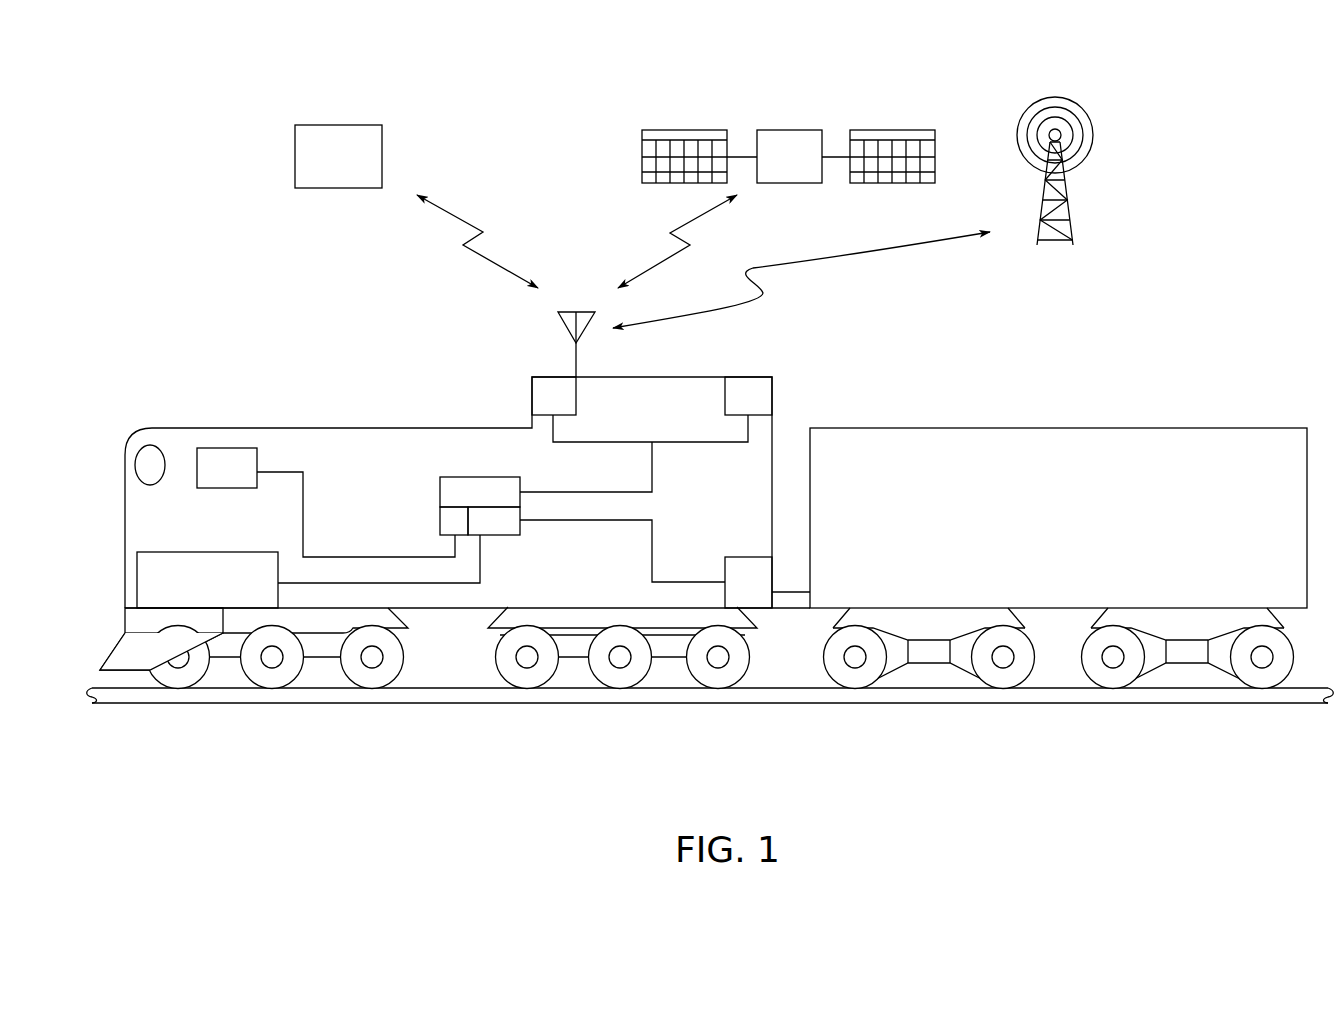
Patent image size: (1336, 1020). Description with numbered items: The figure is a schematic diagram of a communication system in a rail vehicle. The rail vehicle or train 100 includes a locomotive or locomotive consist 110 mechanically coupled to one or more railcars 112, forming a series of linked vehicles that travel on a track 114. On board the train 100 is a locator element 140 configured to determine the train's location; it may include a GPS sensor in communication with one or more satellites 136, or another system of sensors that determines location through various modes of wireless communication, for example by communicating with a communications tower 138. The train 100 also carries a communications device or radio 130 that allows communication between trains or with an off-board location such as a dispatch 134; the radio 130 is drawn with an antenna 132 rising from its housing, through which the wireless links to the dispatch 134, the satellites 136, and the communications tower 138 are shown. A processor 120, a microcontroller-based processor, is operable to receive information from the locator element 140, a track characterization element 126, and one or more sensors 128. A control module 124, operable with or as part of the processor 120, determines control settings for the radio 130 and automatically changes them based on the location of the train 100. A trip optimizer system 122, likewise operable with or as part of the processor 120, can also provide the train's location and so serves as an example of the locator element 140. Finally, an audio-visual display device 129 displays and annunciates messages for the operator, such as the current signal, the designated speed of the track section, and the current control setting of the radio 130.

The rail vehicle 100 is at (802, 404).
The locomotive consist 110 is at (340, 428).
The railcar 112 is at (972, 428).
The track 114 is at (690, 703).
The processor 120 is at (490, 477).
The trip optimizer system 122 is at (440, 520).
The control module 124 is at (497, 535).
The track characterization element 126 is at (128, 590).
The sensor 128 is at (745, 557).
The audio-visual display device 129 is at (238, 488).
The communications device 130 is at (532, 392).
The antenna 132 is at (583, 310).
The dispatch 134 is at (337, 125).
The satellite 136 is at (787, 130).
The communications tower 138 is at (1058, 143).
The locator element 140 is at (750, 377).